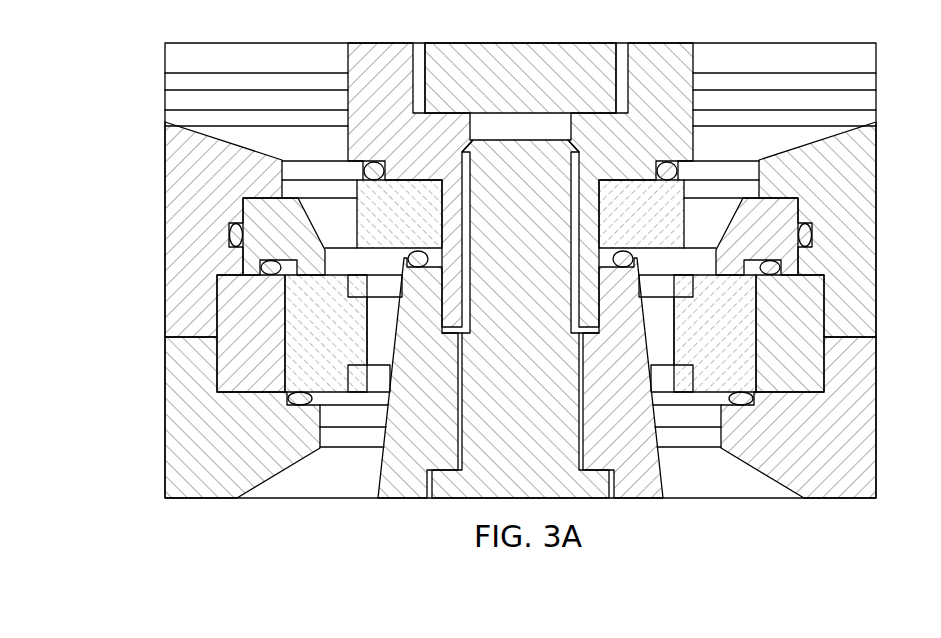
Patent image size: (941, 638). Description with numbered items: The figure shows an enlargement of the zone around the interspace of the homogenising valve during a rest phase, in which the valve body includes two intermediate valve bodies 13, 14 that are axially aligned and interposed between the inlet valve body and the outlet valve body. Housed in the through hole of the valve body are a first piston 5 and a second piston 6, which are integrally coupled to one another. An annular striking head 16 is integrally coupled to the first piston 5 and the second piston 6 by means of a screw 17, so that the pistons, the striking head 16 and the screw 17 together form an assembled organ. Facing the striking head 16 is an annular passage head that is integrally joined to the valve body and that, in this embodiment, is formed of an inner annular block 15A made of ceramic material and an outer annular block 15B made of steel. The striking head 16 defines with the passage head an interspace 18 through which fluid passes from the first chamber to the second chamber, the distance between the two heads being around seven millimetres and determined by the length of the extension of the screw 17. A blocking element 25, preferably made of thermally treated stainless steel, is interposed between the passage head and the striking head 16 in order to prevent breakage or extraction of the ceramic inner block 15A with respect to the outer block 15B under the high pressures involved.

The first piston 5 is at (403, 494).
The second piston 6 is at (388, 47).
The intermediate valve body 13 is at (200, 491).
The intermediate valve body 14 is at (170, 148).
The inner annular block 15A is at (289, 333).
The outer annular block 15B is at (231, 389).
The striking head 16 is at (430, 192).
The screw 17 is at (533, 346).
The interspace 18 is at (352, 288).
The blocking element 25 is at (262, 204).